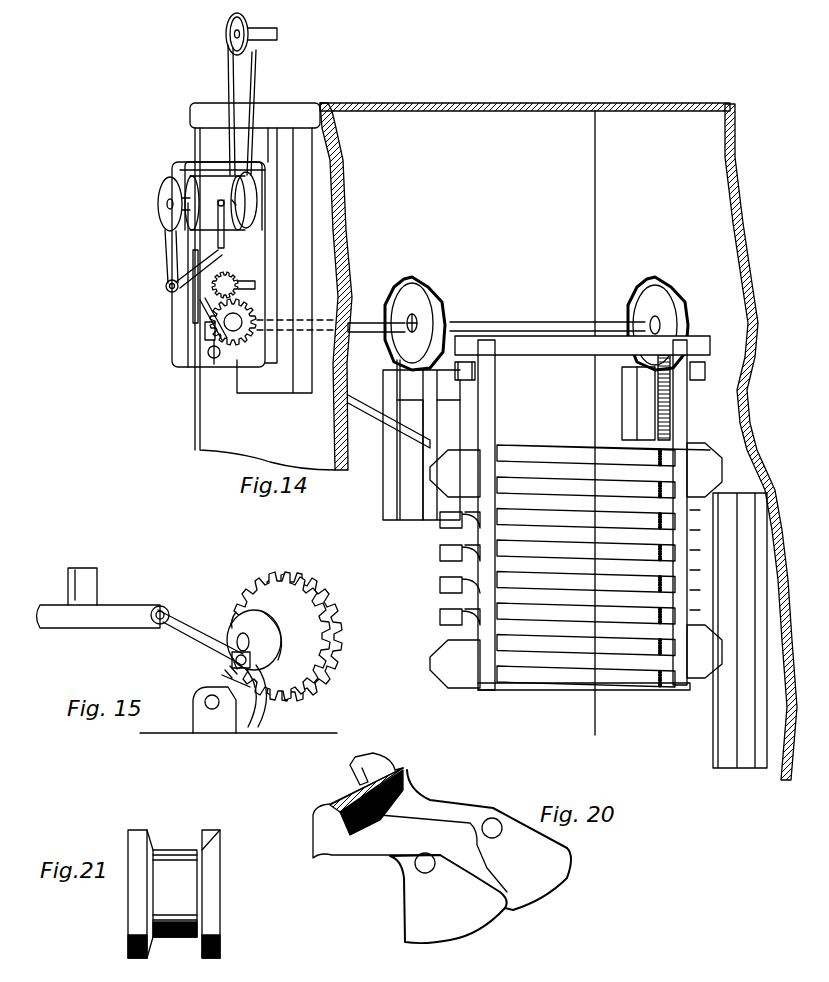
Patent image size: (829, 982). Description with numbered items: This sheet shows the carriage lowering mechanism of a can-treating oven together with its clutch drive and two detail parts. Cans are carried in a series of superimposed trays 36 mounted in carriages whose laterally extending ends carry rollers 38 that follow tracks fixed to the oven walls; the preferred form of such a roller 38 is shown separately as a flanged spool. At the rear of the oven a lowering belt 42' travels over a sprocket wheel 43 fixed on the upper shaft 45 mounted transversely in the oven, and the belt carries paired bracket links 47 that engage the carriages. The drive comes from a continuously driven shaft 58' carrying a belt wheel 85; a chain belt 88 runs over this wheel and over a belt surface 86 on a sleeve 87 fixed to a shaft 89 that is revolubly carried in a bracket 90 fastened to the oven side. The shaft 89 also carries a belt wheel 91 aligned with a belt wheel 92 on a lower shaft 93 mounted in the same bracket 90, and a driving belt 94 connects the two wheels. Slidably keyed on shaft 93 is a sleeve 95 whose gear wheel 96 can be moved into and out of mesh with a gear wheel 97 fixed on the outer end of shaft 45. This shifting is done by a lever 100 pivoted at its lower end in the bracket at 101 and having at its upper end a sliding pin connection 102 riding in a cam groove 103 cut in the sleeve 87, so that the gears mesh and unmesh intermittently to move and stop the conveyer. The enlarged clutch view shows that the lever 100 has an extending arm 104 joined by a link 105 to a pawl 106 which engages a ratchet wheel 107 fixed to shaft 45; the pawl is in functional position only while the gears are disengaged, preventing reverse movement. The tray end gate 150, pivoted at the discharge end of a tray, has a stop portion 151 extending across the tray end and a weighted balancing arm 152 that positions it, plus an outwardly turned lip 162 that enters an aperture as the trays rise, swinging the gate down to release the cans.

In FIG. 14, the tray 36 is at (552, 455).
In FIG. 14, the carriage roller 38 is at (510, 374).
In FIG. 21, the carriage roller 38 is at (174, 894).
In FIG. 14, the lowering belt 42' is at (439, 323).
In FIG. 14, the sprocket wheel 43 is at (406, 282).
In FIG. 14, the upper shaft 45 is at (541, 322).
In FIG. 15, the upper shaft 45 is at (238, 640).
In FIG. 14, the bracket link 47 is at (437, 382).
In FIG. 14, the shaft 58' is at (282, 26).
In FIG. 14, the belt wheel 85 is at (228, 32).
In FIG. 14, the belt surface 86 is at (248, 172).
In FIG. 14, the sleeve 87 is at (215, 164).
In FIG. 14, the chain belt 88 is at (257, 70).
In FIG. 14, the shaft 89 is at (162, 202).
In FIG. 14, the bracket 90 is at (180, 168).
In FIG. 14, the belt wheel 91 is at (170, 215).
In FIG. 14, the belt wheel 92 is at (164, 287).
In FIG. 14, the shaft 93 is at (252, 280).
In FIG. 14, the driving belt 94 is at (165, 250).
In FIG. 14, the sleeve 95 is at (190, 295).
In FIG. 14, the gear wheel 96 is at (262, 298).
In FIG. 14, the gear wheel 97 is at (258, 318).
In FIG. 15, the gear wheel 97 is at (335, 652).
In FIG. 14, the shifting lever 100 is at (196, 247).
In FIG. 15, the shifting lever 100 is at (68, 578).
In FIG. 14, the pivot 101 is at (210, 328).
In FIG. 14, the sliding pin connection 102 is at (236, 205).
In FIG. 14, the cam groove 103 is at (225, 218).
In FIG. 15, the extending arm 104 is at (118, 622).
In FIG. 14, the link 105 is at (215, 336).
In FIG. 15, the link 105 is at (193, 633).
In FIG. 14, the pawl 106 is at (218, 362).
In FIG. 15, the pawl 106 is at (255, 712).
In FIG. 14, the ratchet wheel 107 is at (269, 382).
In FIG. 15, the ratchet wheel 107 is at (240, 614).
In FIG. 20, the end gate 150 is at (352, 813).
In FIG. 14, the stop portion 151 is at (443, 555).
In FIG. 20, the stop portion 151 is at (410, 790).
In FIG. 14, the weighted balancing arm 152 is at (462, 628).
In FIG. 20, the weighted balancing arm 152 is at (420, 925).
In FIG. 14, the outwardly turned lip 162 is at (440, 520).
In FIG. 20, the outwardly turned lip 162 is at (352, 768).